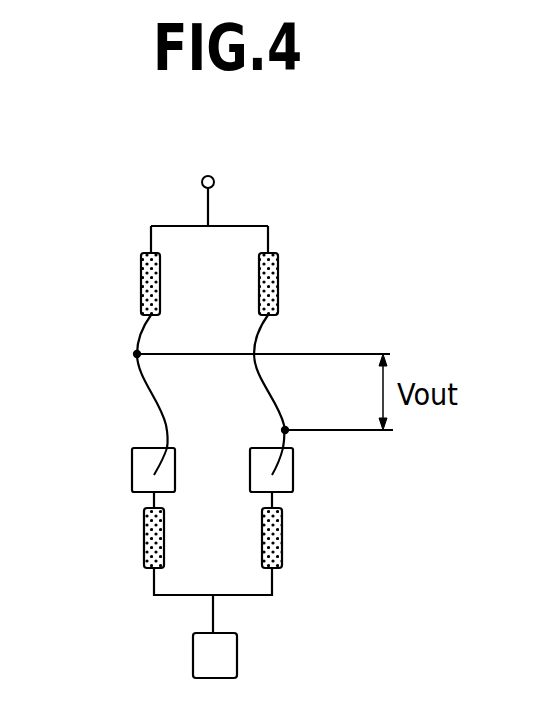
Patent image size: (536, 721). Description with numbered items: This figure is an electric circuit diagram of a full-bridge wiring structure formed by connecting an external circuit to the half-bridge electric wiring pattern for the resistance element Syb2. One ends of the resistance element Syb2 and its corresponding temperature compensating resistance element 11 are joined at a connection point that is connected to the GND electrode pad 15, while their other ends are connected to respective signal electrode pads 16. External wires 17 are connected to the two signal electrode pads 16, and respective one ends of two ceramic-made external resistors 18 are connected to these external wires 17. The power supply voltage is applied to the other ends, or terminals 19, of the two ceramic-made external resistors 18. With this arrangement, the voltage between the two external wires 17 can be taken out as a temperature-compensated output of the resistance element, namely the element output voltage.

The terminals 19 is at (215, 182).
The ceramic-made external resistors 18 is at (141, 279).
The external wires 17 is at (156, 401).
The signal electrode pads 16 is at (134, 474).
The resistance element Syb2 is at (144, 537).
The temperature compensating resistance element 11 is at (283, 537).
The GND electrode pad 15 is at (231, 656).